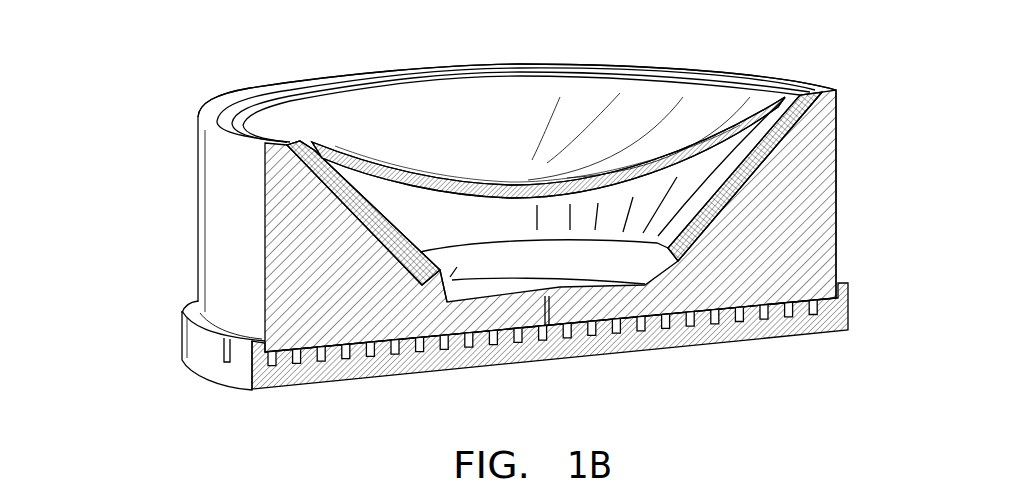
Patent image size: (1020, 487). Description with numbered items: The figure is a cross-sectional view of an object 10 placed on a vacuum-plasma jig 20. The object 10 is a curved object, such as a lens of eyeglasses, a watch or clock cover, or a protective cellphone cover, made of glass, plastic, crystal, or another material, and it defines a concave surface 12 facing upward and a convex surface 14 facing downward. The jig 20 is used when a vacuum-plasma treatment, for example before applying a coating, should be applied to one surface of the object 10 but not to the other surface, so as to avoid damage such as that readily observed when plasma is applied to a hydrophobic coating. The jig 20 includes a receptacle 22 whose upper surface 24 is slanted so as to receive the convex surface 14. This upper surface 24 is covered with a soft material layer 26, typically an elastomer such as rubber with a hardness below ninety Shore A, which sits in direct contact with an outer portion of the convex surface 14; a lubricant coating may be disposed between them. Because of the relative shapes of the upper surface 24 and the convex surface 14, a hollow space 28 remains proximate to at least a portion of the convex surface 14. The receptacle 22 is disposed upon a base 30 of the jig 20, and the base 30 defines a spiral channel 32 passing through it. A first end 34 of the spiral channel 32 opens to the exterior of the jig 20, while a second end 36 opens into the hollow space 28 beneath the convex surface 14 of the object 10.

The object 10 is at (728, 93).
The concave surface 12 is at (447, 110).
The convex surface 14 is at (520, 197).
The vacuum-plasma jig 20 is at (173, 183).
The receptacle 22 is at (300, 230).
The upper surface 24 is at (340, 183).
The soft material layer 26 is at (775, 138).
The hollow space 28 is at (437, 293).
The base 30 is at (233, 377).
The spiral channel 32 is at (663, 327).
The first end 34 is at (224, 352).
The second end 36 is at (547, 328).